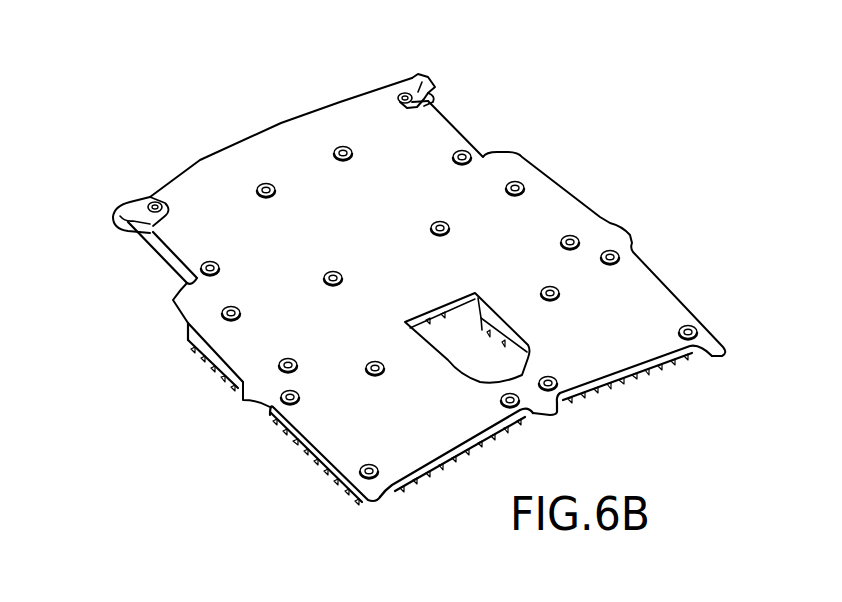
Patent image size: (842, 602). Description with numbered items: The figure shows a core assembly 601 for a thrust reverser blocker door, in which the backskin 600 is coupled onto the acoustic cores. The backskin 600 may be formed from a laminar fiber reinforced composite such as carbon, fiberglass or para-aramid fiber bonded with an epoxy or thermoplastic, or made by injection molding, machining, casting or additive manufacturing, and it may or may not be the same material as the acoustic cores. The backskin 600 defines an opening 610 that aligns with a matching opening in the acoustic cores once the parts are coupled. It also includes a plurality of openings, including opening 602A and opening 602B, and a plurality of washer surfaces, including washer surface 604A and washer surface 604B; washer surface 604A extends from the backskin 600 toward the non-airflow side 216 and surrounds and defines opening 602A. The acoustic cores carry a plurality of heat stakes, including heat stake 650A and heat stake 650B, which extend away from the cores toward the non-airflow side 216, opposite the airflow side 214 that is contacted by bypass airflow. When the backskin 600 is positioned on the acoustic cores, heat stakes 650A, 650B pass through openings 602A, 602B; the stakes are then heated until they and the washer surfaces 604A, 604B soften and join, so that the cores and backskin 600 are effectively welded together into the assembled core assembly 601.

The core assembly 601 is at (222, 120).
The backskin 600 is at (653, 347).
The opening 602A is at (143, 200).
The opening 602B is at (412, 78).
The washer surface 604A is at (120, 204).
The washer surface 604B is at (412, 102).
The heat stake 650A is at (140, 240).
The heat stake 650B is at (433, 93).
The airflow side 214 is at (293, 450).
The non-airflow side 216 is at (250, 328).
The opening 610 is at (477, 357).